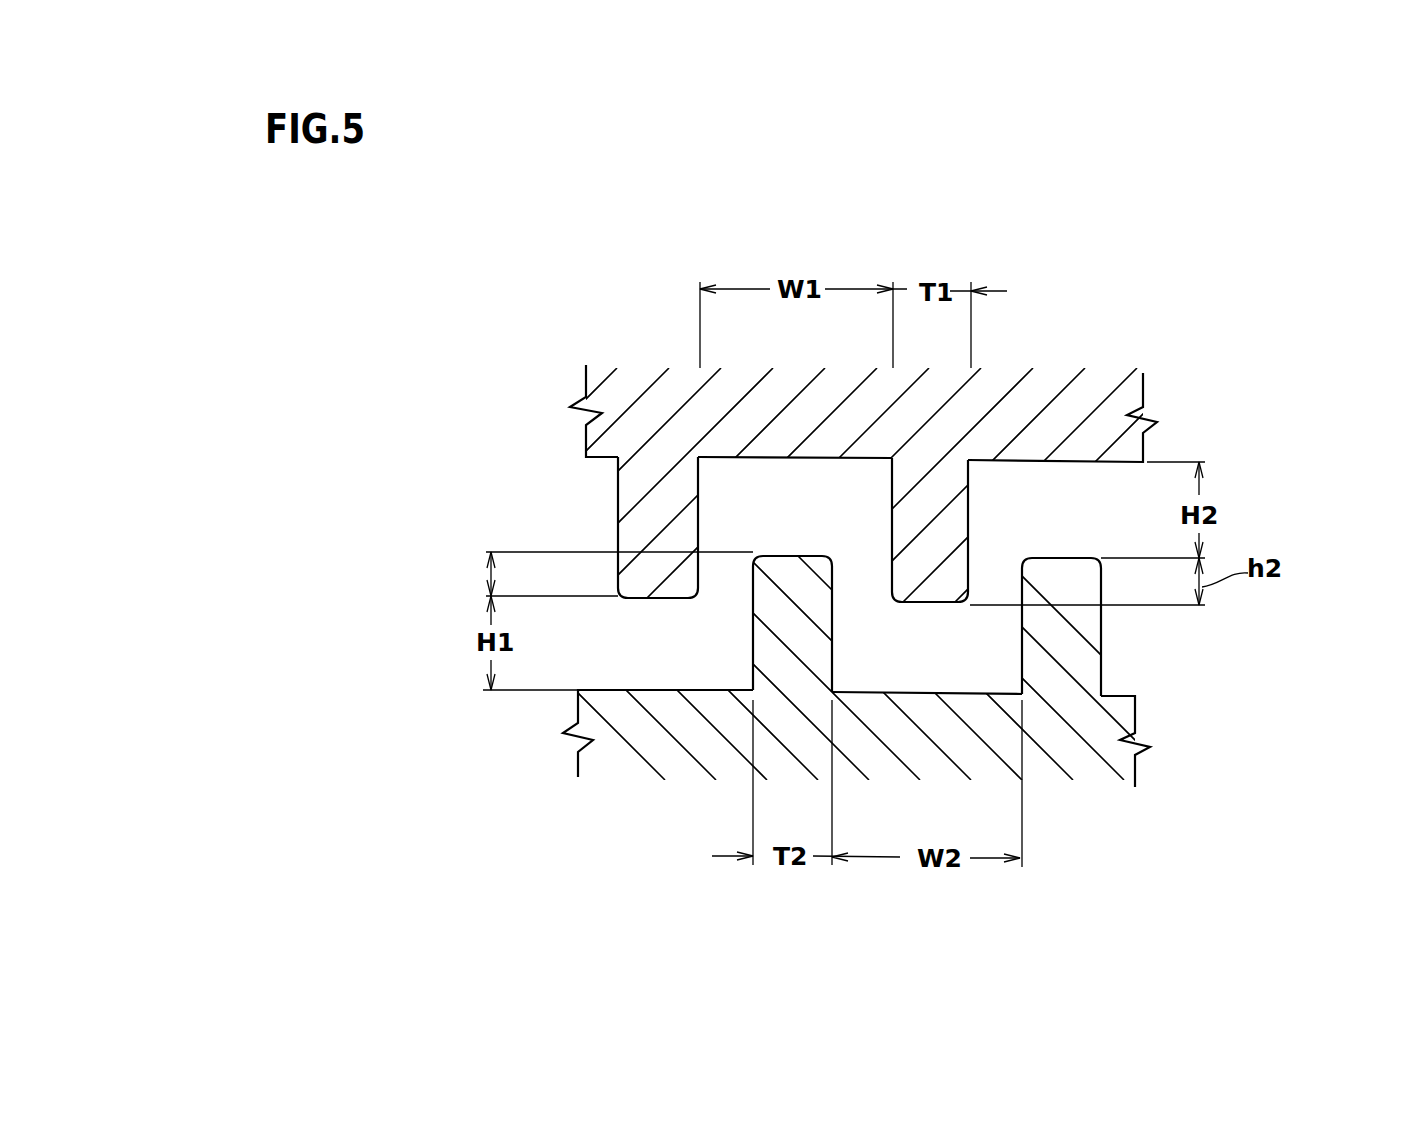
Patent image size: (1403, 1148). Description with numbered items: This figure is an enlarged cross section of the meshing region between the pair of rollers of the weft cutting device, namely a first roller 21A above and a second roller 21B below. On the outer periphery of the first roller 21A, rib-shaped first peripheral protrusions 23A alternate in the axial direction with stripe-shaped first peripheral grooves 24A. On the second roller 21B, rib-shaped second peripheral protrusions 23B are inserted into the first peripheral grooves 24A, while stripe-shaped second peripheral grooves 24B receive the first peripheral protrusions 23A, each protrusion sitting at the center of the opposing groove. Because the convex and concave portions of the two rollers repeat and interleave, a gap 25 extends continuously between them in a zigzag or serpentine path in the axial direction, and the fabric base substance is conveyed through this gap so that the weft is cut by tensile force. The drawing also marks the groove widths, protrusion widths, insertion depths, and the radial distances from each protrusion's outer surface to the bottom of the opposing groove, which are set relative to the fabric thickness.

The first roller 21A is at (1143, 383).
The second roller 21B is at (1137, 768).
The first peripheral protrusion 23A is at (653, 570).
The second peripheral protrusion 23B is at (793, 577).
The first peripheral groove 24A is at (797, 493).
The second peripheral groove 24B is at (922, 670).
The gap 25 is at (993, 557).